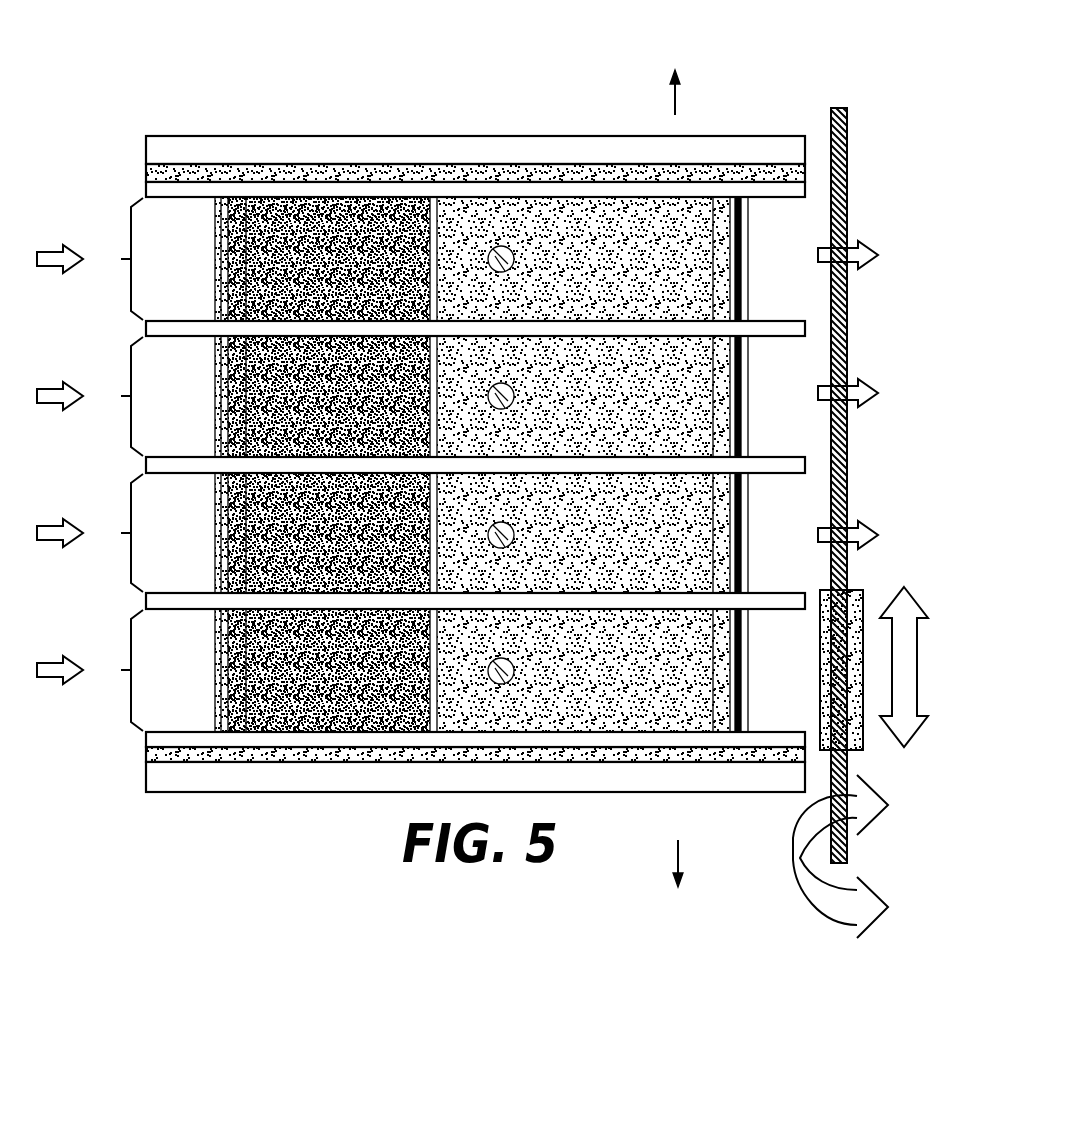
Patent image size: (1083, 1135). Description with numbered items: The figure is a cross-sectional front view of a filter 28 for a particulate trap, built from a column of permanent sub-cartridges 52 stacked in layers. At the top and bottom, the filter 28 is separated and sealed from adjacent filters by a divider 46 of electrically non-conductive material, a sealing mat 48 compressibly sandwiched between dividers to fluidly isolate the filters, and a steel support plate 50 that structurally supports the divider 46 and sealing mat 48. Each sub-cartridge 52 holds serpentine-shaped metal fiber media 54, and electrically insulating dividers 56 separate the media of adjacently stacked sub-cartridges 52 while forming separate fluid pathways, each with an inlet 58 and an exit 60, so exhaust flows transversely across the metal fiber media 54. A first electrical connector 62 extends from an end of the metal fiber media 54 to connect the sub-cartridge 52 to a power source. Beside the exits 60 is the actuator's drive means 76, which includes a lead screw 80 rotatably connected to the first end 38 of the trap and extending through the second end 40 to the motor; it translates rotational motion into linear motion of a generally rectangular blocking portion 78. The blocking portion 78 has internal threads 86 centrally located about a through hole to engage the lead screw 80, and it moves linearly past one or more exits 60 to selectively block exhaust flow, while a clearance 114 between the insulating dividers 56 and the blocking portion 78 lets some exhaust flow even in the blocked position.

The filter 28 is at (248, 832).
The first end 38 is at (660, 92).
The second end 40 is at (664, 863).
The divider 46 is at (142, 188).
The sealing mat 48 is at (146, 158).
The support plate 50 is at (144, 168).
The sub-cartridge 52 is at (90, 464).
The metal fiber media 54 is at (671, 276).
The insulating divider 56 is at (146, 322).
The inlet 58 is at (212, 262).
The exit 60 is at (753, 260).
The first electrical connector 62 is at (500, 246).
The drive means 76 is at (876, 78).
The blocking portion 78 is at (862, 590).
The lead screw 80 is at (848, 112).
The internal threads 86 is at (851, 752).
The clearance 114 is at (813, 601).